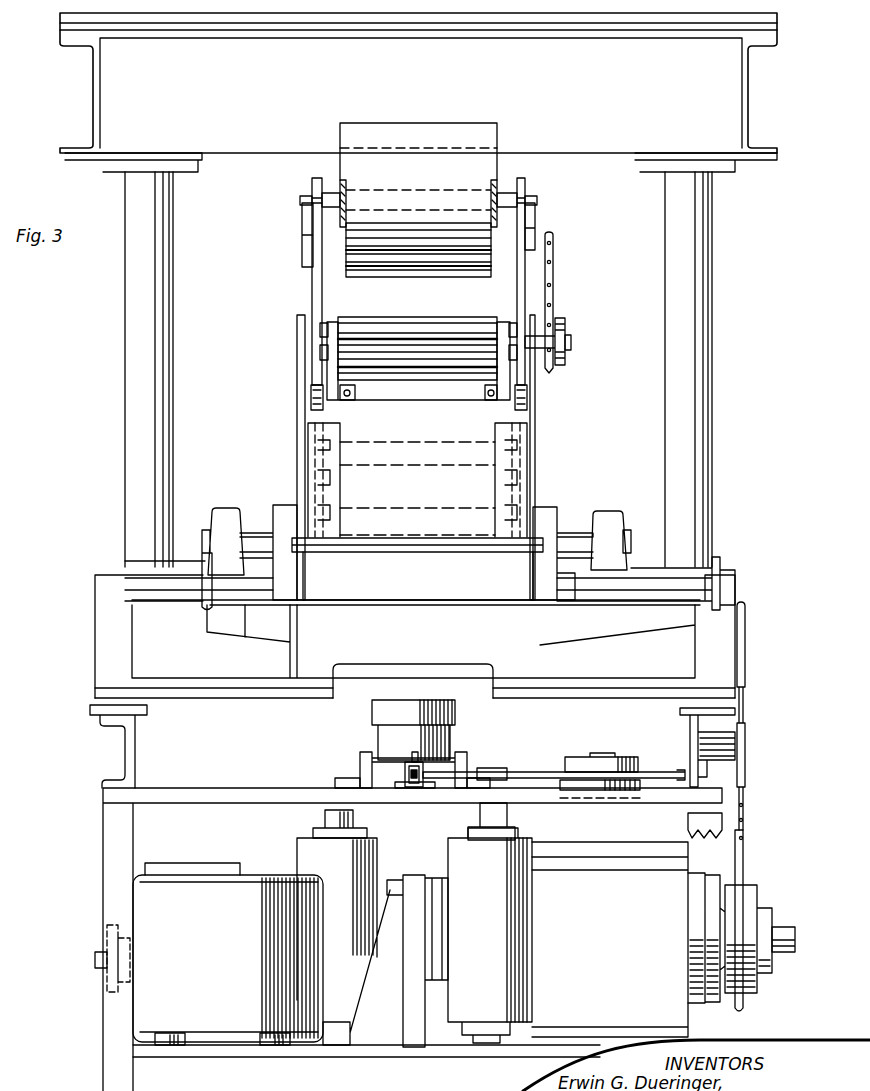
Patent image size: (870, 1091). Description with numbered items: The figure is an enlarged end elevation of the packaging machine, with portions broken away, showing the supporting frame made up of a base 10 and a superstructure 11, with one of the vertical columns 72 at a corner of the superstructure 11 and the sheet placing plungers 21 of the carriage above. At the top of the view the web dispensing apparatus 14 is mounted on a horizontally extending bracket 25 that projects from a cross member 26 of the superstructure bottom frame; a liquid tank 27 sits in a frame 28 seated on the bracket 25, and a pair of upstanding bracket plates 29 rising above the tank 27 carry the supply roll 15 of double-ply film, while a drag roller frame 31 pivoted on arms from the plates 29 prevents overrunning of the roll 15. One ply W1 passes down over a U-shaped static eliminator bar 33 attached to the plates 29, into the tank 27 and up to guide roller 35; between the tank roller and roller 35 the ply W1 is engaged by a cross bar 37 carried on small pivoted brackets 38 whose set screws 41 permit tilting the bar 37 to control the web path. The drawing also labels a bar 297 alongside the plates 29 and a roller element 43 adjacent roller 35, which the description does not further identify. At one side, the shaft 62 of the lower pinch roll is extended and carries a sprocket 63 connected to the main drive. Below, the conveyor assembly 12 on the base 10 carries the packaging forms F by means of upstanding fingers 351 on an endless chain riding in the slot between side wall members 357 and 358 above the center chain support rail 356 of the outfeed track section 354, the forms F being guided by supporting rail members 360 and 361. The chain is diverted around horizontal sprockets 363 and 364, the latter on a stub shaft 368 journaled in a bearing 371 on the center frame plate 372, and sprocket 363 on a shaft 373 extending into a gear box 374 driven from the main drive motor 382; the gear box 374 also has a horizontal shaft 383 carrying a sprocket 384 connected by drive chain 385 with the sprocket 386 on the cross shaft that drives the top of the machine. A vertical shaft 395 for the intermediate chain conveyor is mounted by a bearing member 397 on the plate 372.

The base 10 is at (112, 753).
The superstructure 11 is at (749, 102).
The conveyor assembly 12 is at (328, 772).
The dispensing apparatus 14 is at (570, 238).
The supply roll 15 is at (417, 131).
The sheet placing plungers 21 is at (712, 362).
The bracket 25 is at (145, 649).
The cross member 26 is at (108, 593).
The tank 27 is at (500, 487).
The frame 28 is at (418, 576).
The bracket plates 29 is at (312, 285).
The guide bar 297 is at (553, 296).
The frame 31 is at (400, 527).
The static eliminator bar 33 is at (311, 398).
The guide roller 35 is at (369, 362).
The cross bar 37 is at (357, 398).
The brackets 38 is at (333, 377).
The set screws 41 is at (320, 350).
The pressure roller 43 is at (462, 325).
The web ply W1 is at (436, 304).
The shaft 62 is at (540, 338).
The sprocket 63 is at (560, 372).
The vertical column 72 is at (125, 362).
The cylinder S is at (454, 702).
The packaging forms F is at (453, 732).
The form engaging fingers 351 is at (408, 757).
The outfeed end section 354 is at (360, 758).
The center chain support rail 356 is at (416, 792).
The side wall member 357 is at (463, 771).
The side wall member 358 is at (409, 779).
The supporting rail member 360 is at (380, 782).
The supporting rail member 361 is at (457, 760).
The sprocket 363 is at (658, 771).
The sprocket 364 is at (533, 771).
The stub shaft 368 is at (506, 818).
The bearing 371 is at (455, 885).
The center frame plate 372 is at (413, 880).
The shaft 373 is at (598, 756).
The gear box 374 is at (626, 956).
The main drive motor 382 is at (232, 956).
The horizontal shaft 383 is at (785, 928).
The sprocket 384 is at (748, 892).
The drive chain 385 is at (745, 821).
The sprocket 386 is at (745, 641).
The shaft 395 is at (326, 824).
The bearing member 397 is at (377, 887).